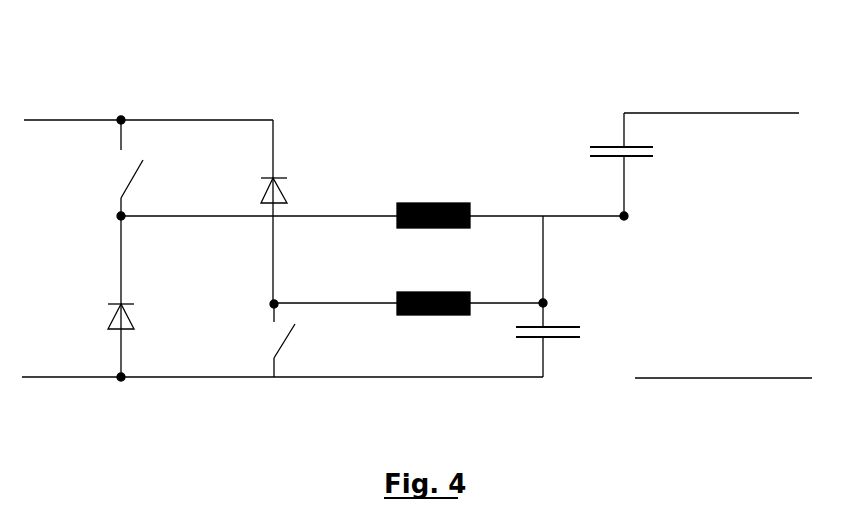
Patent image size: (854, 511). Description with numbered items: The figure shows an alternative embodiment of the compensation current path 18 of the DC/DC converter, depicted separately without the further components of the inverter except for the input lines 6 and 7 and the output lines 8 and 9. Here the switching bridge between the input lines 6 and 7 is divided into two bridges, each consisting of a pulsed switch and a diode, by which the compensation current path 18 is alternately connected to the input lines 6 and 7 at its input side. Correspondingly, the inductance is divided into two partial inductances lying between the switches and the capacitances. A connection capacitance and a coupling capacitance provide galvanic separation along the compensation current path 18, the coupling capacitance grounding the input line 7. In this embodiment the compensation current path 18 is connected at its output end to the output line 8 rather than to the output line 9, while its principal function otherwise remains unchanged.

The input line 6 is at (63, 120).
The input line 7 is at (90, 378).
The output line 8 is at (708, 113).
The output line 9 is at (718, 378).
The compensation current path 18 is at (489, 162).